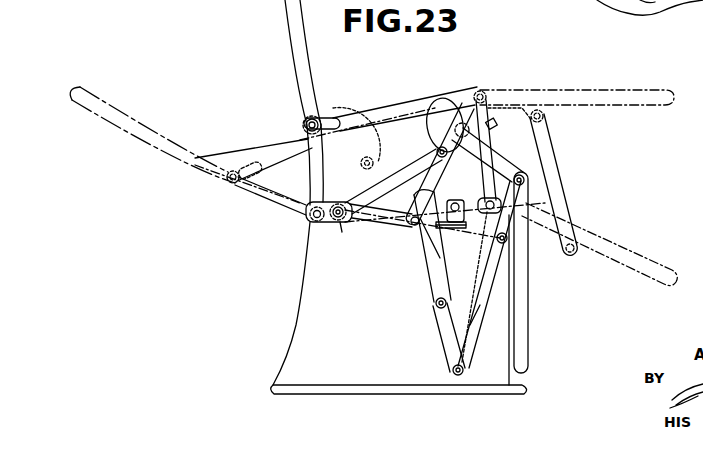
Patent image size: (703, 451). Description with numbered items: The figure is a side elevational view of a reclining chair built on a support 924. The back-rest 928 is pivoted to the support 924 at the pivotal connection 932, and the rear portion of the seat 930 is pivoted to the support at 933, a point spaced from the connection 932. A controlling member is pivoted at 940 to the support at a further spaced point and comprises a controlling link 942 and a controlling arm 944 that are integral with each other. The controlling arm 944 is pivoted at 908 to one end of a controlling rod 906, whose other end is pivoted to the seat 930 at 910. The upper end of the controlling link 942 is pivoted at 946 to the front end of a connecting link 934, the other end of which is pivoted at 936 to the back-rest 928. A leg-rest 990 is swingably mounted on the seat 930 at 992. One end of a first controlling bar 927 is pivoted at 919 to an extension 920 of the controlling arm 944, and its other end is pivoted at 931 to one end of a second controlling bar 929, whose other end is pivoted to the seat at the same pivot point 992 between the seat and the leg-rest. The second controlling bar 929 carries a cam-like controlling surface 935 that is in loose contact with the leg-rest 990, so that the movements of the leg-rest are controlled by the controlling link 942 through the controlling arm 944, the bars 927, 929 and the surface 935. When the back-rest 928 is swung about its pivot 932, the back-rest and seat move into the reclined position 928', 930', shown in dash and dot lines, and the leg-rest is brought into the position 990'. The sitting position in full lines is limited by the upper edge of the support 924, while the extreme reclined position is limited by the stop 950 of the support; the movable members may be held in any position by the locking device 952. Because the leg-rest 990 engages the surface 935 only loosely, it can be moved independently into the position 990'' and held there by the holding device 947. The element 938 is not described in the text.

The controlling rod 906 is at (457, 262).
The pivot of controlling arm to controlling rod 908 is at (437, 317).
The pivot of controlling rod to seat 910 is at (489, 197).
The pivot of first controlling bar to extension 919 is at (453, 371).
The extension of the controlling arm 920 is at (443, 320).
The support 924 is at (292, 303).
The first controlling bar 927 is at (470, 325).
The back-rest 928 is at (313, 102).
The reclined position of the back-rest 928' is at (185, 145).
The second controlling bar 929 is at (513, 181).
The seat 930 is at (353, 222).
The reclined position of the seat 930' is at (275, 177).
The pivot between first and second controlling bars 931 is at (515, 240).
The pivotal connection between back-rest and support 932 is at (318, 220).
The pivot of seat to support 933 is at (342, 232).
The connecting link 934 is at (386, 111).
The controlling surface 935 is at (508, 232).
The pivot of connecting link to back-rest 936 is at (314, 117).
The link 938 is at (448, 160).
The pivot of controlling member to support 940 is at (411, 224).
The controlling link 942 is at (432, 167).
The controlling arm 944 is at (428, 287).
The pivot of controlling link to connecting link 946 is at (433, 99).
The holding device 947 is at (443, 236).
The stop 950 is at (304, 214).
The locking device 952 is at (332, 115).
The leg-rest 990 is at (540, 272).
The reclined position of the leg-rest 990' is at (574, 100).
The independently adjusted position of the leg-rest 990'' is at (599, 244).
The pivot of leg-rest to seat 992 is at (551, 150).